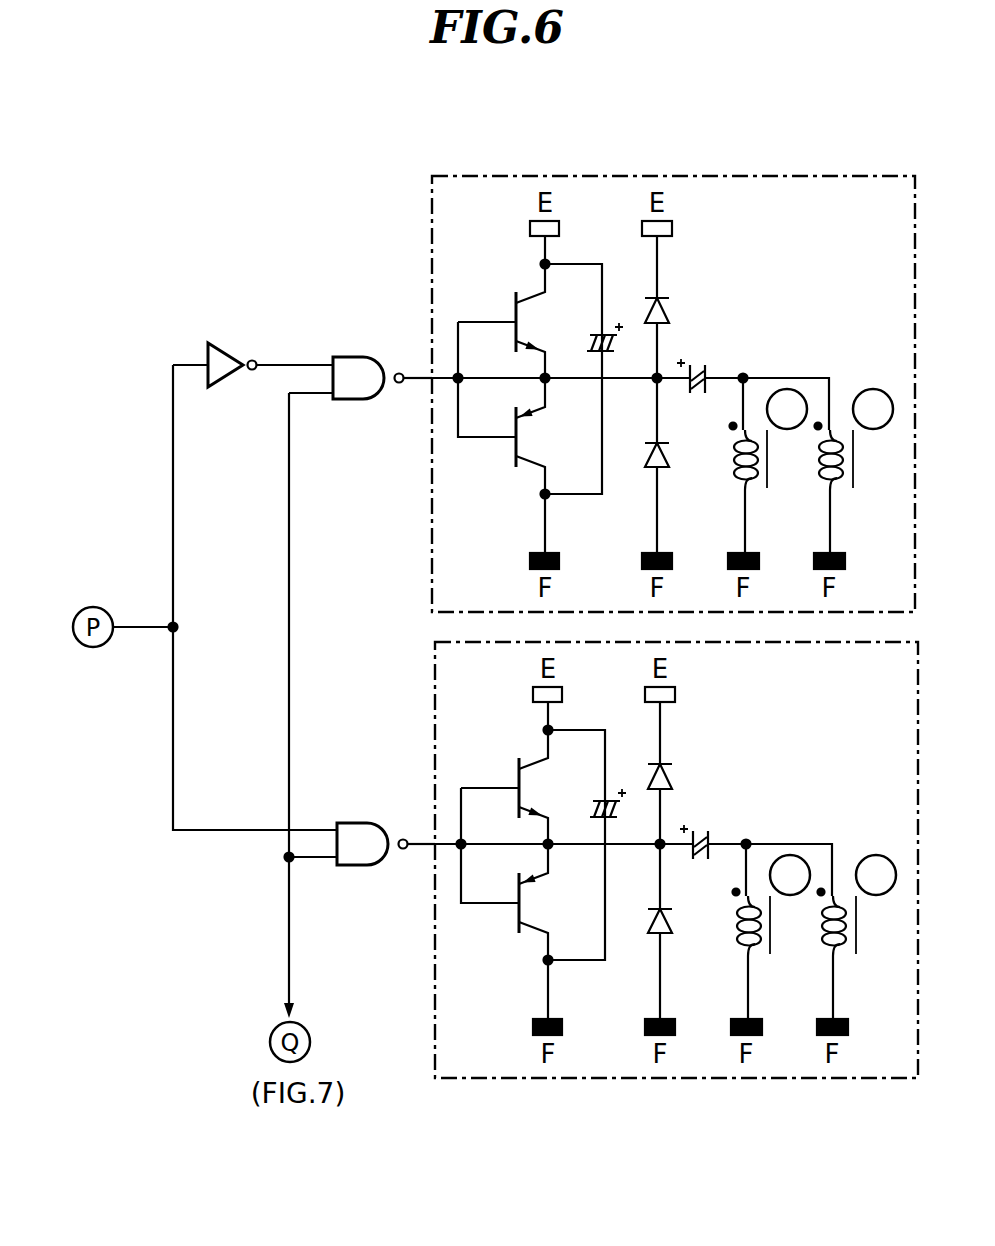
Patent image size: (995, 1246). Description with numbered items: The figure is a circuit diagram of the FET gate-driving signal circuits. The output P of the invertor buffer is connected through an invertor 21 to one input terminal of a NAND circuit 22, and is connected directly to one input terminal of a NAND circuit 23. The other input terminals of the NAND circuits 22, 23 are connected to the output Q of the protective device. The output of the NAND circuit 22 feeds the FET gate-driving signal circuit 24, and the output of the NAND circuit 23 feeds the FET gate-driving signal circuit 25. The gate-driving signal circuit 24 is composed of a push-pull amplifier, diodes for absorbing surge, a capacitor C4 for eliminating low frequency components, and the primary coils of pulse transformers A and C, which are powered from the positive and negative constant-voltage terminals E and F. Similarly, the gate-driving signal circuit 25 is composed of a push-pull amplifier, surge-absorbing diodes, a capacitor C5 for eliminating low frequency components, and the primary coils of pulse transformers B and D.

The invertor 21 is at (236, 352).
The NAND circuit 22 is at (362, 357).
The NAND circuit 23 is at (368, 823).
The FET gate-driving signal circuit 24 is at (631, 394).
The FET gate-driving signal circuit 25 is at (635, 860).
The capacitor C4 is at (705, 361).
The capacitor C5 is at (708, 827).